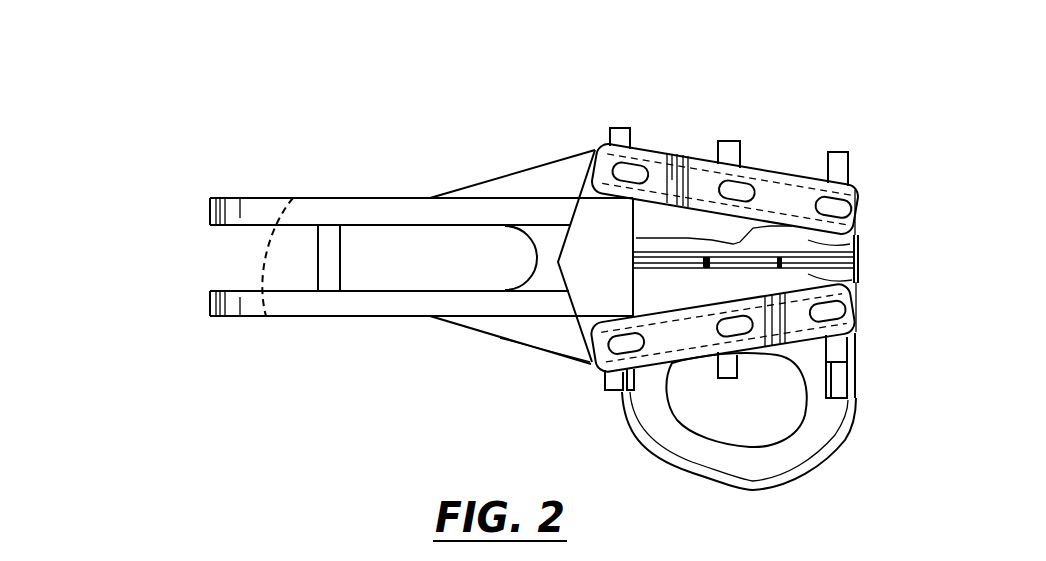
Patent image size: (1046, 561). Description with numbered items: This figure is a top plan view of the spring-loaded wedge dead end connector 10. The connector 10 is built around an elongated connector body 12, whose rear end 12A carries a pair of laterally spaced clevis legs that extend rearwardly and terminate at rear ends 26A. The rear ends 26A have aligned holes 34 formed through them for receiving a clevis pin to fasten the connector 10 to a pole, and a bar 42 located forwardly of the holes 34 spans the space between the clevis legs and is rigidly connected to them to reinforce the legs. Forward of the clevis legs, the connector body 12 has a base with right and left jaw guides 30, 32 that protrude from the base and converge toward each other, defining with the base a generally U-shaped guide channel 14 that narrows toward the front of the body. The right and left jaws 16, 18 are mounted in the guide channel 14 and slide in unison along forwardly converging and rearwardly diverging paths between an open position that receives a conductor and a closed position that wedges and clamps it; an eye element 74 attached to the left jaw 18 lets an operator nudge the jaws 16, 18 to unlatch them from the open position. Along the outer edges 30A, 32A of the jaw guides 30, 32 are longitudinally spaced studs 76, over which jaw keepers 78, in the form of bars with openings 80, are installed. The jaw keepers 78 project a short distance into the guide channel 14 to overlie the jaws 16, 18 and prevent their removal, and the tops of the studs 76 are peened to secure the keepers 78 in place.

The spring-loaded wedge dead end connector 10 is at (516, 117).
The elongated connector body 12 is at (400, 316).
The rear end of connector body 12A is at (595, 213).
The guide channel 14 is at (680, 290).
The right jaw 16 is at (857, 270).
The left jaw 18 is at (855, 243).
The rear ends of clevis legs 26A is at (218, 305).
The right jaw guide 30 is at (774, 350).
The outer edge of right jaw guide 30A is at (668, 342).
The left jaw guide 32 is at (665, 152).
The outer edge of left jaw guide 32A is at (793, 193).
The holes 34 is at (266, 320).
The bar 42 is at (330, 261).
The eye element 74 is at (672, 223).
The studs 76 is at (628, 172).
The jaw keepers 78 is at (857, 205).
The openings 80 is at (752, 185).